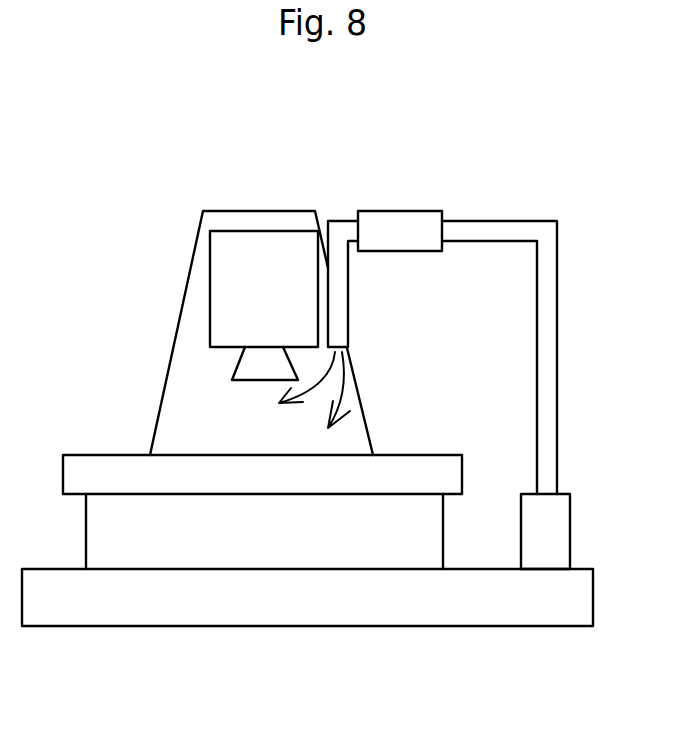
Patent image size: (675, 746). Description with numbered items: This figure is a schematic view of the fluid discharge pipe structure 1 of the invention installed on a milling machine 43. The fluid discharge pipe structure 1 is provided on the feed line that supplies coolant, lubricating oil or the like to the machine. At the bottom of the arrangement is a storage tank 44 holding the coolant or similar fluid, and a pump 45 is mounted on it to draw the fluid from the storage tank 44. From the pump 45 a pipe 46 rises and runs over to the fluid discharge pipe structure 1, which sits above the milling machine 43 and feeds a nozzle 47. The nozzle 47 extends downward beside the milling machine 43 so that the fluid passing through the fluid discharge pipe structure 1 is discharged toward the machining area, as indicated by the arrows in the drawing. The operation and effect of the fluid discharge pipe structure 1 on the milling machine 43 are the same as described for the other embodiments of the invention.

The fluid discharge pipe structure 1 is at (400, 225).
The milling machine 43 is at (152, 338).
The storage tank 44 is at (333, 615).
The pump 45 is at (558, 529).
The pipe 46 is at (550, 362).
The nozzle 47 is at (340, 307).